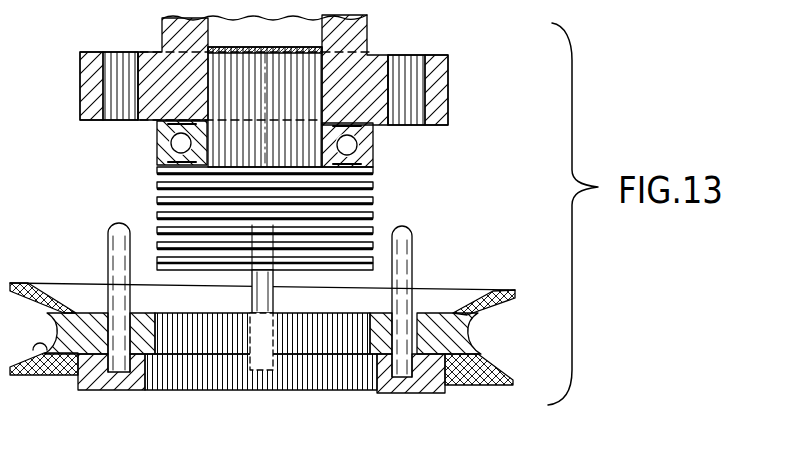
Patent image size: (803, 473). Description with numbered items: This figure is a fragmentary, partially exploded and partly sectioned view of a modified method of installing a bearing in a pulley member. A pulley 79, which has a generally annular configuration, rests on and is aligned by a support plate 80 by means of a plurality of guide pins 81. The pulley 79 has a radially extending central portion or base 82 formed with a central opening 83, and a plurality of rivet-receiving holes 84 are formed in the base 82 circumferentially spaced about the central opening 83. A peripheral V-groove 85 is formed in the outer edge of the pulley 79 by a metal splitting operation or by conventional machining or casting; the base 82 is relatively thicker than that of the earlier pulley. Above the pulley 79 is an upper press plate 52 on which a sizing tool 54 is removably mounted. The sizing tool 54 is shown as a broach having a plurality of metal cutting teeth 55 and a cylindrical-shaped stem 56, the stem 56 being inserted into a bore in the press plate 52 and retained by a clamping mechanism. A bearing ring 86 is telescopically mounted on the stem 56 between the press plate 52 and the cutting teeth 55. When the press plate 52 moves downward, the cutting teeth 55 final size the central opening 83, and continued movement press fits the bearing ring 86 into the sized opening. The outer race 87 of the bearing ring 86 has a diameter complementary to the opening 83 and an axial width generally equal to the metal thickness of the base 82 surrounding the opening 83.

The press plate 52 is at (93, 89).
The sizing tool 54 is at (197, 212).
The cutting teeth 55 is at (370, 203).
The stem 56 is at (308, 78).
The pulley 79 is at (445, 287).
The support plate 80 is at (92, 378).
The guide pins 81 is at (110, 235).
The base 82 is at (440, 337).
The central opening 83 is at (128, 330).
The rivet-receiving holes 84 is at (370, 355).
The V-groove 85 is at (34, 372).
The bearing ring 86 is at (376, 144).
The outer race 87 is at (156, 140).